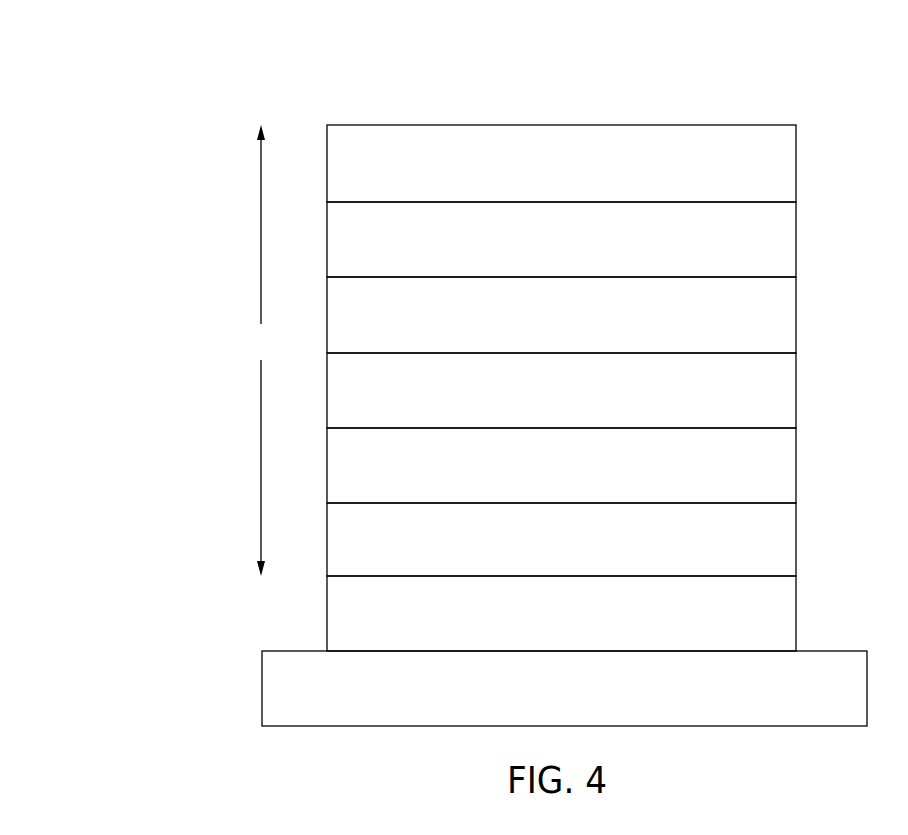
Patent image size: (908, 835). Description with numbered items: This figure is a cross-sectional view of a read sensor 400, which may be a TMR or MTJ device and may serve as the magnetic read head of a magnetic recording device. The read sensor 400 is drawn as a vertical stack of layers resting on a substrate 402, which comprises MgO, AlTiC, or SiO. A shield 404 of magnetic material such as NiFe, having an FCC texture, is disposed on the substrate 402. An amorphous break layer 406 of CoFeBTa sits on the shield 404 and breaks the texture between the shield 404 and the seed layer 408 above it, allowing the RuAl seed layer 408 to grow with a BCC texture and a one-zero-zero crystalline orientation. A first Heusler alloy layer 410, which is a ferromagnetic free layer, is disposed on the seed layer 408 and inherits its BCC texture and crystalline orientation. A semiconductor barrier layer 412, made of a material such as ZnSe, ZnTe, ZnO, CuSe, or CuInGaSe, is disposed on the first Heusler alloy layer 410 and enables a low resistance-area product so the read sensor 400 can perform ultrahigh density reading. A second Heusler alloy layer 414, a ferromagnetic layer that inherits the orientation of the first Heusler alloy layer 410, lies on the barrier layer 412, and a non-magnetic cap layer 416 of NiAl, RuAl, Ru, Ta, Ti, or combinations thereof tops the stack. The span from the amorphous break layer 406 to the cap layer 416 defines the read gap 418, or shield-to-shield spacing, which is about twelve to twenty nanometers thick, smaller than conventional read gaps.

The read sensor 400 is at (150, 65).
The substrate 402 is at (658, 701).
The shield 404 is at (632, 627).
The amorphous break layer 406 is at (700, 554).
The seed layer 408 is at (657, 479).
The first Heusler alloy layer 410 is at (695, 404).
The semiconductor barrier layer 412 is at (637, 329).
The second Heusler alloy layer 414 is at (699, 254).
The cap layer 416 is at (616, 180).
The read gap 418 is at (261, 350).